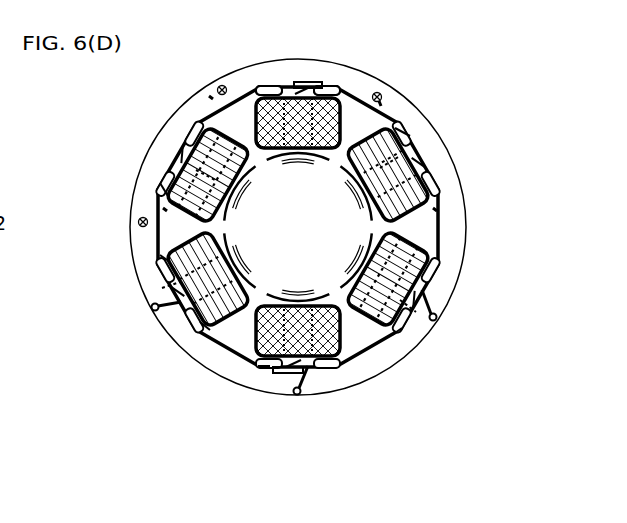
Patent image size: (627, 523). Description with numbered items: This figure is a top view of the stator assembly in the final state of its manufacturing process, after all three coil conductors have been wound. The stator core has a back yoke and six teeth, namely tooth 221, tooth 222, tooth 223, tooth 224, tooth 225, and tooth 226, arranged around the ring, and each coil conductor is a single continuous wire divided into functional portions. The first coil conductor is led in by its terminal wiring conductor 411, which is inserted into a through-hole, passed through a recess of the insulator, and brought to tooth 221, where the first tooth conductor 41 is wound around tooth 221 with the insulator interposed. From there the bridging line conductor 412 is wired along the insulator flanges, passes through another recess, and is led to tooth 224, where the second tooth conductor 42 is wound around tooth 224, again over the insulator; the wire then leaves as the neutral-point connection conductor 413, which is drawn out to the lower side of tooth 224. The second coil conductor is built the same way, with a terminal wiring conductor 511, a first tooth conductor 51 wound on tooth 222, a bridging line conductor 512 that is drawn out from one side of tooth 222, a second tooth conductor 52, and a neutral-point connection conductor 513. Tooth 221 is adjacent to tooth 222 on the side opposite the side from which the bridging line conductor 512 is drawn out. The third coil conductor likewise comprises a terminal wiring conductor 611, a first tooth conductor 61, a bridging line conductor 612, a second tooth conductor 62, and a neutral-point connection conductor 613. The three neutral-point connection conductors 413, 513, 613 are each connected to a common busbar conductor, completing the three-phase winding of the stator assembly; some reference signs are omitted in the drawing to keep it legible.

The first tooth conductor 41 is at (161, 258).
The second tooth conductor 42 is at (404, 131).
The first tooth conductor 51 is at (262, 366).
The second tooth conductor 52 is at (259, 87).
The first tooth conductor 61 is at (396, 339).
The second tooth conductor 62 is at (158, 187).
The terminal wiring conductor 411 is at (157, 313).
The bridging line conductor 412 is at (202, 326).
The neutral-point connection conductor 413 is at (382, 98).
The terminal wiring conductor 511 is at (307, 378).
The bridging line conductor 512 is at (352, 88).
The neutral-point connection conductor 513 is at (223, 85).
The terminal wiring conductor 611 is at (431, 302).
The bridging line conductor 612 is at (202, 119).
The neutral-point connection conductor 613 is at (152, 213).
The tooth 221 is at (161, 288).
The tooth 222 is at (290, 374).
The tooth 223 is at (418, 313).
The tooth 224 is at (402, 154).
The tooth 225 is at (301, 82).
The tooth 226 is at (196, 170).